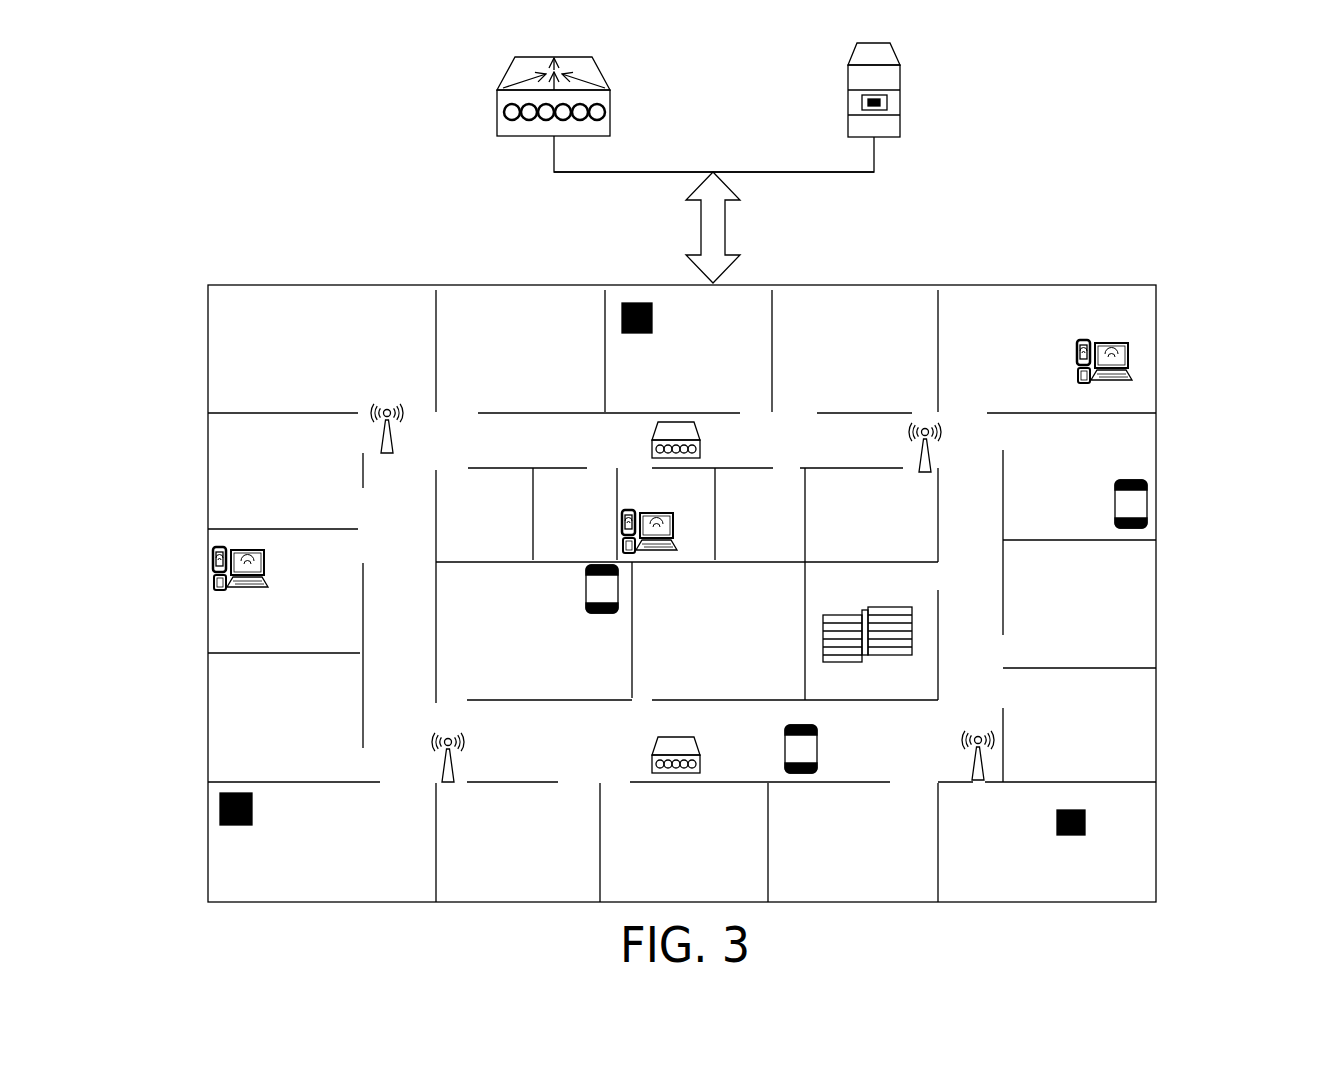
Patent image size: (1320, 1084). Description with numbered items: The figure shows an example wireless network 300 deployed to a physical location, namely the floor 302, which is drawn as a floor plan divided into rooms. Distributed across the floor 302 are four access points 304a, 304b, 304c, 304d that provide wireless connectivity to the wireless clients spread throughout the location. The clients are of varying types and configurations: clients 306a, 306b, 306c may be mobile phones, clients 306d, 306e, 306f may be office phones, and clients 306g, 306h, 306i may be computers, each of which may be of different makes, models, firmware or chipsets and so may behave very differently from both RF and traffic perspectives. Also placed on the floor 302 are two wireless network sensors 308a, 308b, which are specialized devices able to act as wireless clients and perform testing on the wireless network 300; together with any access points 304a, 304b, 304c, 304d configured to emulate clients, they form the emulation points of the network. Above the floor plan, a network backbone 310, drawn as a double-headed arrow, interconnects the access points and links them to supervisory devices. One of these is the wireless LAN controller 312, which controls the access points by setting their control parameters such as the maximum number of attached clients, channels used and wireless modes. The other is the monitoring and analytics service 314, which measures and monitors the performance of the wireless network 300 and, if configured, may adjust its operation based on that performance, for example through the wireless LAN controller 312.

The wireless network 300 is at (1217, 115).
The floor 302 is at (218, 910).
The access point 304a is at (358, 395).
The access point 304b is at (946, 447).
The access point 304c is at (421, 730).
The access point 304d is at (970, 718).
The client 306a is at (822, 750).
The client 306b is at (597, 627).
The client 306c is at (1100, 492).
The client 306d is at (655, 349).
The client 306e is at (249, 838).
The client 306f is at (1063, 848).
The client 306g is at (243, 600).
The client 306h is at (690, 538).
The client 306i is at (1068, 360).
The wireless network sensor 308a is at (642, 453).
The wireless network sensor 308b is at (642, 752).
The network backbone 310 is at (690, 229).
The wireless LAN controller 312 is at (485, 90).
The monitoring and analytics service 314 is at (892, 152).